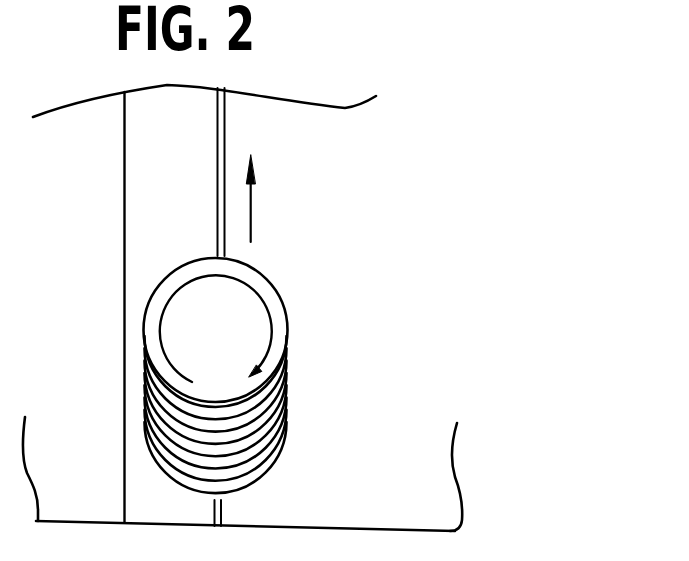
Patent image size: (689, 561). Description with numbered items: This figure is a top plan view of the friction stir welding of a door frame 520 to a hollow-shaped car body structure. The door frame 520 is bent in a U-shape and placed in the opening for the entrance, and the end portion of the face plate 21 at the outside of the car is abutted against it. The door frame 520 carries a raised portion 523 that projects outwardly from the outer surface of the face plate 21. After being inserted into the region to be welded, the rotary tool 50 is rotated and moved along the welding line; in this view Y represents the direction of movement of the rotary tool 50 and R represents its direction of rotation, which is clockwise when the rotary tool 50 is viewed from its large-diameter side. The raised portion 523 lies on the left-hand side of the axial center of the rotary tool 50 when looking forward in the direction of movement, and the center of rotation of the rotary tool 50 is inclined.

The face plate 21 is at (379, 465).
The rotary tool 50 is at (290, 332).
The door frame 520 is at (108, 400).
The raised portion 523 is at (137, 221).
The direction of rotation R is at (265, 299).
The direction of movement Y is at (260, 198).